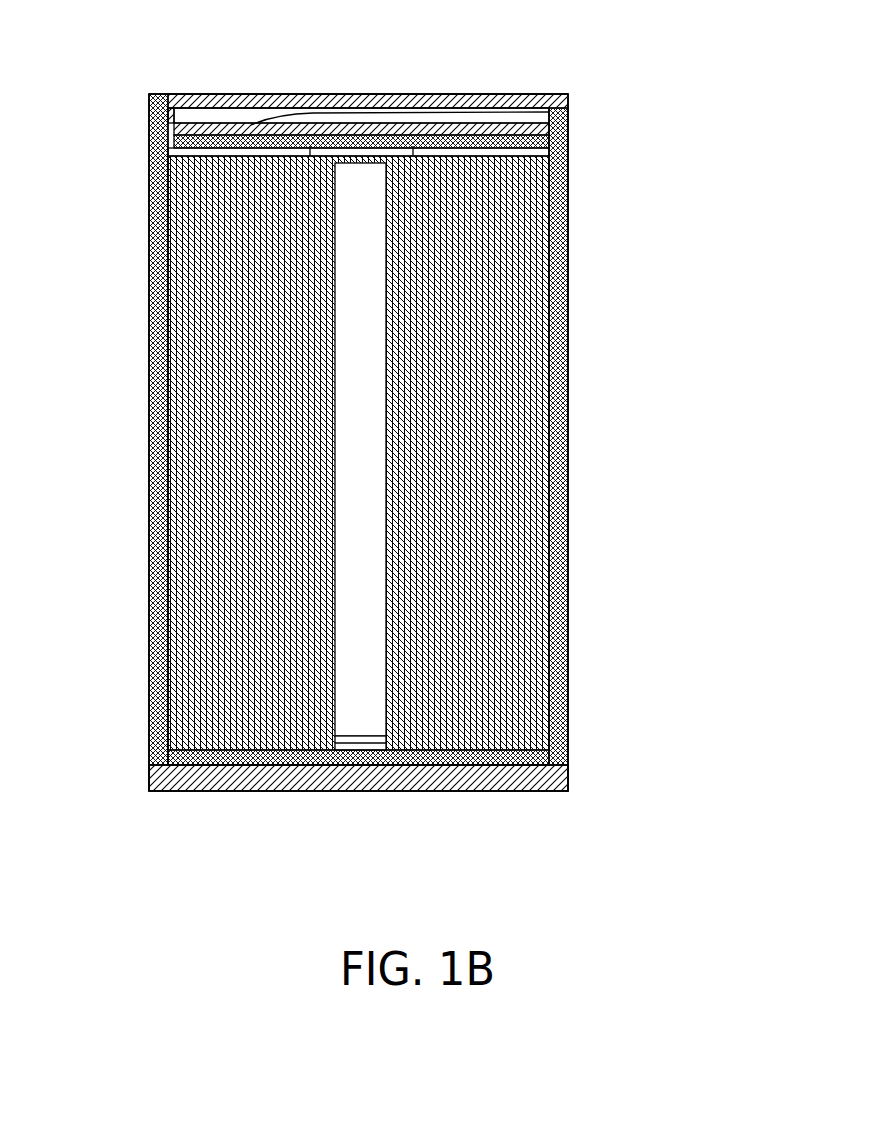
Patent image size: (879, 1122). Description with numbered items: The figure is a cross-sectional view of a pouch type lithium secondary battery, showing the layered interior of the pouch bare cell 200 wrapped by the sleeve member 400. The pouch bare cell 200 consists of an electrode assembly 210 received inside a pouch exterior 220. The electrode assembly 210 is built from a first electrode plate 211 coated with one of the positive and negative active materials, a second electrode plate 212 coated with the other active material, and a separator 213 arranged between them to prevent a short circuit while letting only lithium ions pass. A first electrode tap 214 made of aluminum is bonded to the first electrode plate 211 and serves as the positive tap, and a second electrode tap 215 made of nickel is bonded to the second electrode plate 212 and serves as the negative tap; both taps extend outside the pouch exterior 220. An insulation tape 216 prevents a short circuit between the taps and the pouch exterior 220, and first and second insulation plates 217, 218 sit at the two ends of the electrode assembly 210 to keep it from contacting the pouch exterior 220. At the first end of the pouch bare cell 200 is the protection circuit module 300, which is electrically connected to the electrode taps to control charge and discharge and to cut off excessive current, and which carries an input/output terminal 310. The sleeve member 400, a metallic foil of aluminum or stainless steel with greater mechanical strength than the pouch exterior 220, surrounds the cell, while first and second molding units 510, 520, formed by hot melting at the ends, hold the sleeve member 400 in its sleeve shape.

The pouch bare cell 200 is at (747, 252).
The electrode assembly 210 is at (672, 98).
The first electrode plate 211 is at (561, 285).
The second electrode plate 212 is at (561, 336).
The separator 213 is at (561, 380).
The first electrode tap 214 is at (563, 128).
The second electrode tap 215 is at (563, 105).
The insulation tape 216 is at (563, 150).
The first insulation plate 217 is at (563, 175).
The second insulation plate 218 is at (560, 724).
The pouch exterior 220 is at (556, 778).
The protection circuit module 300 is at (172, 95).
The input/output terminal 310 is at (228, 86).
The sleeve member 400 is at (140, 190).
The first molding unit 510 is at (345, 84).
The second molding unit 520 is at (338, 784).